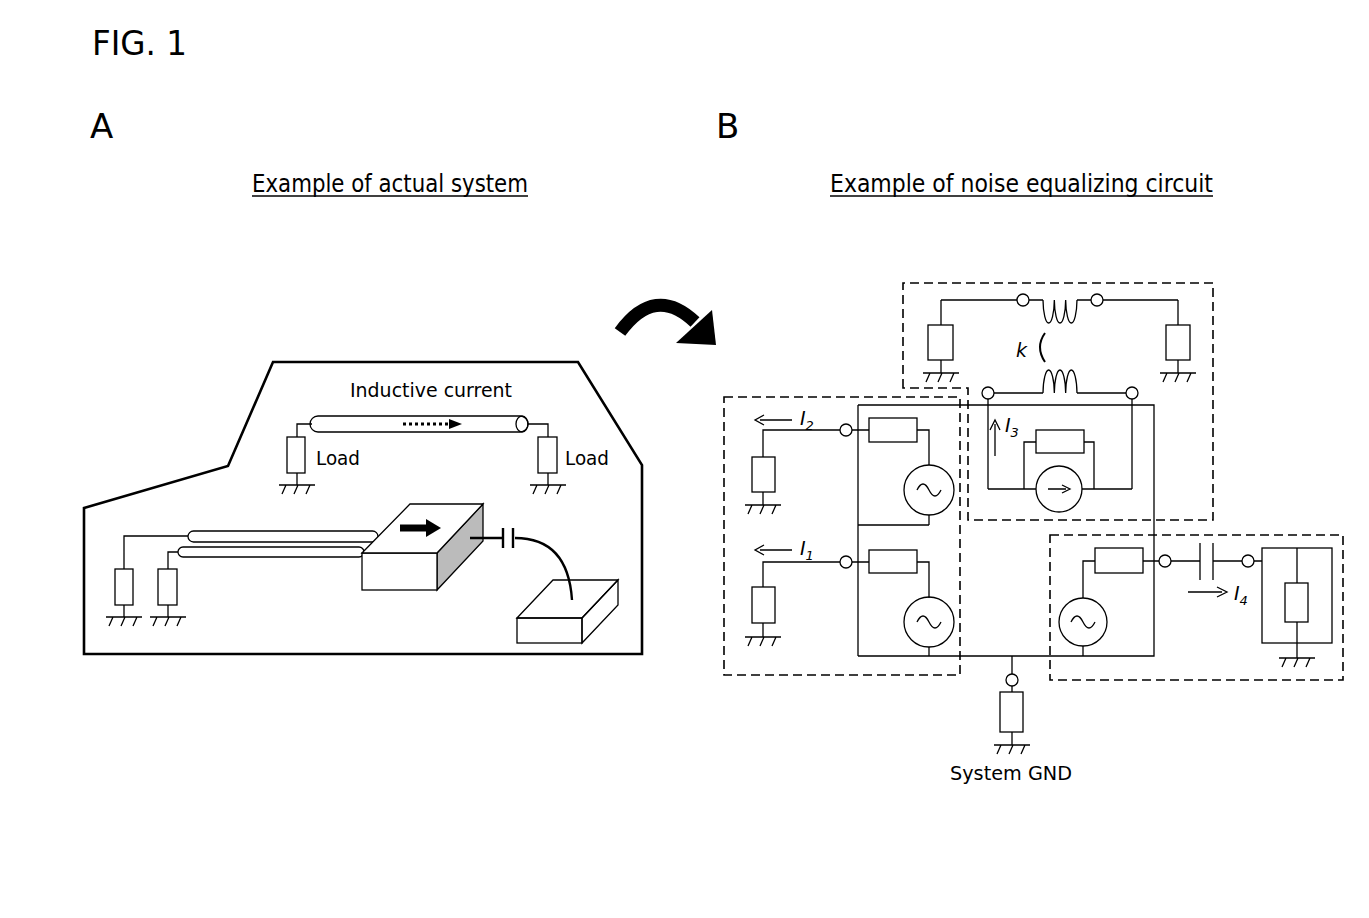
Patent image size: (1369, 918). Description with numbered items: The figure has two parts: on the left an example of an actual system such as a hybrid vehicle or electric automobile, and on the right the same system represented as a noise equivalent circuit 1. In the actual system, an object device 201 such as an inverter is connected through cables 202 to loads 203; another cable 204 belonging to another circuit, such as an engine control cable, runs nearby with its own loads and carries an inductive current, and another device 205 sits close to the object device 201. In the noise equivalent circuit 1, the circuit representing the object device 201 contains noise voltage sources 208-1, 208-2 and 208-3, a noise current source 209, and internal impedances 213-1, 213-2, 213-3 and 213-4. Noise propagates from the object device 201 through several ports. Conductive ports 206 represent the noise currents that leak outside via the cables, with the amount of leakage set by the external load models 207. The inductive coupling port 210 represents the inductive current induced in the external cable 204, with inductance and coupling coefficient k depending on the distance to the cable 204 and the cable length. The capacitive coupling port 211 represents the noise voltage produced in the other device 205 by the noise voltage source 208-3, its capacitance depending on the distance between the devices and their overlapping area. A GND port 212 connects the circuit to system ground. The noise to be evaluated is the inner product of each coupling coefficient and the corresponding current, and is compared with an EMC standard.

The noise equivalent circuit 1 is at (1236, 244).
The object device 201 is at (412, 587).
The cables 202 is at (320, 555).
The loads 203 is at (177, 592).
The other cable 204 is at (442, 434).
The other device 205 is at (590, 577).
The conductive ports 206 is at (842, 437).
The load model 207 is at (775, 475).
The noise voltage source 208-1 is at (953, 612).
The noise voltage source 208-2 is at (950, 510).
The noise voltage source 208-3 is at (1060, 606).
The noise current source 209 is at (1080, 500).
The inductive coupling port 210 is at (992, 387).
The capacitive coupling port 211 is at (1168, 568).
The GND port 212 is at (1018, 683).
The internal impedance 213-1 is at (890, 576).
The internal impedance 213-2 is at (888, 418).
The internal impedance 213-3 is at (1084, 432).
The internal impedance 213-4 is at (1095, 550).